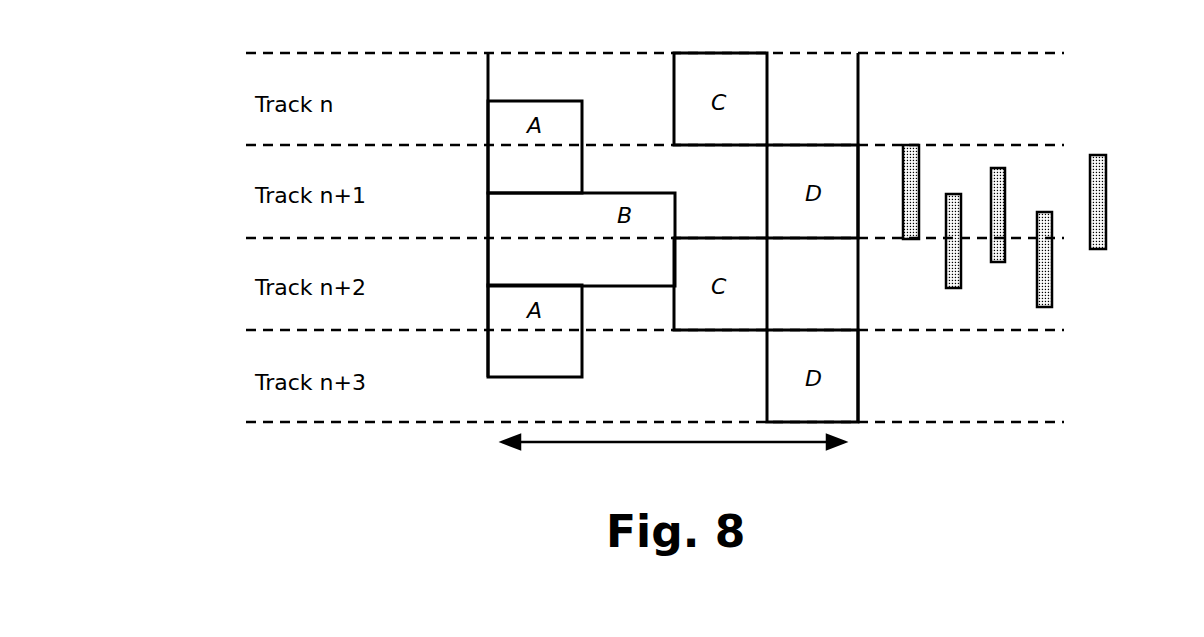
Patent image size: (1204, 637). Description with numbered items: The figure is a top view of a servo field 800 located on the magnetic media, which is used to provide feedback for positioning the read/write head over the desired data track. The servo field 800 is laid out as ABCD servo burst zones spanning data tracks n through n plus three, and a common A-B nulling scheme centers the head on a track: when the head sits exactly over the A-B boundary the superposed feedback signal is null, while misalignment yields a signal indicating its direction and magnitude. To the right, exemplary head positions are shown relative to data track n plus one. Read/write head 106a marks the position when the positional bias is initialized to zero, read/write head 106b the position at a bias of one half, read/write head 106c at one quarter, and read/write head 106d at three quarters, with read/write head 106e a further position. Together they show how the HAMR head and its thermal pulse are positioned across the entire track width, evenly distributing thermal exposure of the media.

The read/write head 106a is at (911, 145).
The read/write head 106b is at (952, 194).
The read/write head 106c is at (997, 168).
The read/write head 106d is at (1045, 212).
The read/write head 106e is at (1098, 155).
The servo field 800 is at (787, 444).